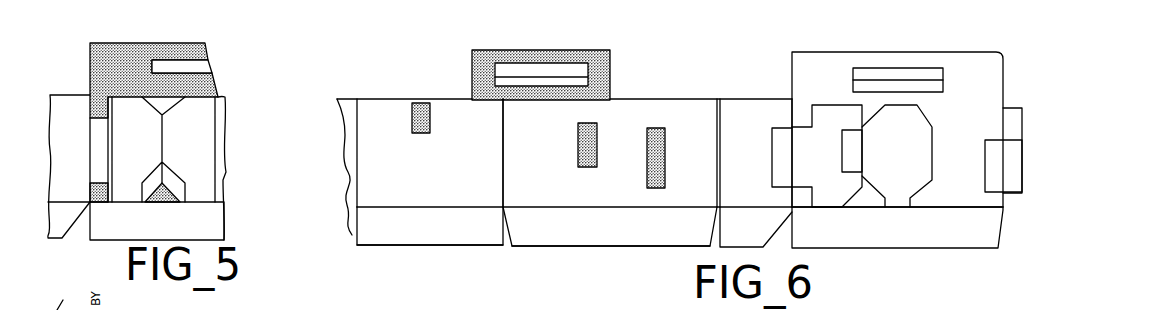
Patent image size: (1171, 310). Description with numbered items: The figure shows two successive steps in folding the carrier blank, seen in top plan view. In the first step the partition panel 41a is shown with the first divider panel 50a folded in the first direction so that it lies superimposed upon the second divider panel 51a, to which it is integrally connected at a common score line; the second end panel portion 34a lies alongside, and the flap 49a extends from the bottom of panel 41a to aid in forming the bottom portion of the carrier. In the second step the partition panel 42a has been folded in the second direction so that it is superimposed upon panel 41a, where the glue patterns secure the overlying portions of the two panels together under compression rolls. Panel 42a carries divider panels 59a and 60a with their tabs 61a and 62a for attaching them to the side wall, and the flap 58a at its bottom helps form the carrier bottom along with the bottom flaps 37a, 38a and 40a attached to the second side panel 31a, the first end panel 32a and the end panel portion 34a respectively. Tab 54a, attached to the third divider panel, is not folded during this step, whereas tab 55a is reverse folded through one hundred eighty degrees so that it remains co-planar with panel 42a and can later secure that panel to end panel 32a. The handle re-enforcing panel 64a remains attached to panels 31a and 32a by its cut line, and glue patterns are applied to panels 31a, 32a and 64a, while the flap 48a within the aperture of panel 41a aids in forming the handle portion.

In FIG. 6, the second side panel 31a is at (557, 173).
In FIG. 6, the first end panel 32a is at (437, 173).
In FIG. 5, the second end panel portion 34a is at (65, 115).
In FIG. 6, the second end panel portion 34a is at (765, 153).
In FIG. 6, the bottom flap 37a is at (618, 238).
In FIG. 6, the bottom flap 38a is at (440, 237).
In FIG. 6, the bottom flap 40a is at (765, 241).
In FIG. 5, the partition panel 41a is at (131, 45).
In FIG. 6, the partition panel 42a is at (840, 85).
In FIG. 6, the flap 48a is at (575, 309).
In FIG. 5, the flap 49a is at (177, 232).
In FIG. 6, the flap 49a is at (899, 6).
In FIG. 5, the first divider panel 50a is at (210, 148).
In FIG. 5, the second divider panel 51a is at (228, 110).
In FIG. 6, the tab 54a is at (1015, 180).
In FIG. 6, the tab 55a is at (1013, 118).
In FIG. 6, the flap 58a is at (918, 240).
In FIG. 6, the divider panel 59a is at (917, 158).
In FIG. 6, the divider panel 60a is at (838, 178).
In FIG. 6, the tab 61a is at (848, 140).
In FIG. 6, the tab 62a is at (777, 165).
In FIG. 6, the handle re-enforcing panel 64a is at (515, 53).